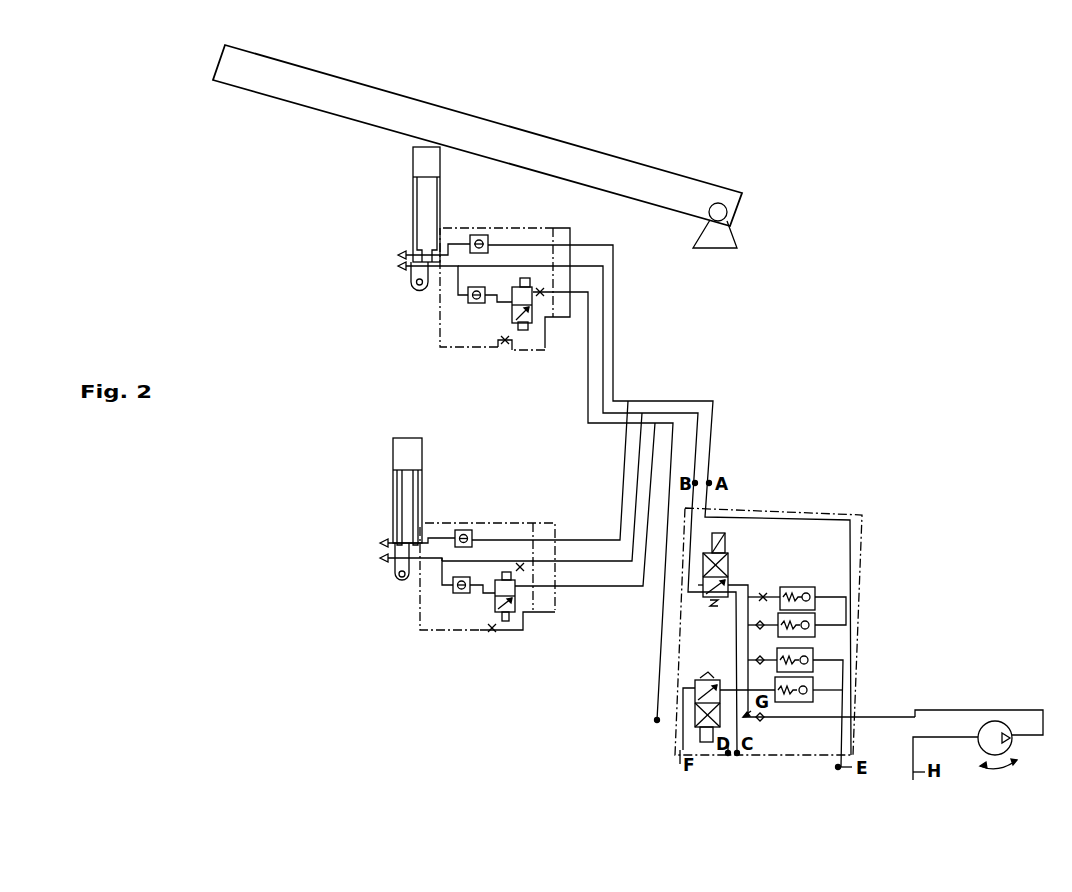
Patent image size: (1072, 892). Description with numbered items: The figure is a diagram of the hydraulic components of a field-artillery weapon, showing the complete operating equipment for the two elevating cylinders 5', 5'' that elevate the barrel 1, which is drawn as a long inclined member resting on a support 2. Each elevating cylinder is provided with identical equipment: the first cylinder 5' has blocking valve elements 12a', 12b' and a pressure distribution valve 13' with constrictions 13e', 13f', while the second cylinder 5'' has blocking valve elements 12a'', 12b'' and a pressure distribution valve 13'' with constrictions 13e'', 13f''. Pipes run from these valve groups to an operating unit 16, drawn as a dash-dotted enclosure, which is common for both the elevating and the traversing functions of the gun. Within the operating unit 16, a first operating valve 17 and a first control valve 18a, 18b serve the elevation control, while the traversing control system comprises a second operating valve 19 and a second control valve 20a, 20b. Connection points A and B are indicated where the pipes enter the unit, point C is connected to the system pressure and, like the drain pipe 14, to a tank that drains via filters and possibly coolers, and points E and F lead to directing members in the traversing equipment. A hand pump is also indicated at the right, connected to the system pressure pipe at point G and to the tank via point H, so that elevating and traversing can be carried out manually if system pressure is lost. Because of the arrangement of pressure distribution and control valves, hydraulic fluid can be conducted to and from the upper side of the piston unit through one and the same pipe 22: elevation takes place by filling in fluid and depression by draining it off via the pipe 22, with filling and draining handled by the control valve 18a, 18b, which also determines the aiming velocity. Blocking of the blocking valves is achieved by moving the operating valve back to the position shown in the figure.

The barrel 1 is at (578, 158).
The support roller 2 is at (709, 216).
The elevating cylinder 5'' is at (463, 219).
The elevating cylinder 5' is at (442, 509).
The blocking valve element 12a'' is at (488, 230).
The blocking valve element 12b'' is at (459, 302).
The blocking valve element 12a' is at (442, 521).
The blocking valve element 12b' is at (441, 592).
The pressure distribution valve 13'' is at (505, 312).
The pressure distribution valve 13' is at (521, 578).
The constriction 13e'' is at (607, 289).
The constriction 13e' is at (548, 523).
The constriction 13f'' is at (460, 371).
The constriction 13f' is at (459, 651).
The drain pipe 14 is at (655, 720).
The operating unit 16 is at (855, 547).
The first operating valve 17 is at (728, 577).
The first control valve 18a is at (822, 586).
The first control valve 18b is at (822, 647).
The second operating valve 19 is at (742, 737).
The second control valve 20a is at (843, 668).
The second control valve 20b is at (813, 702).
The pipe 22 is at (713, 423).